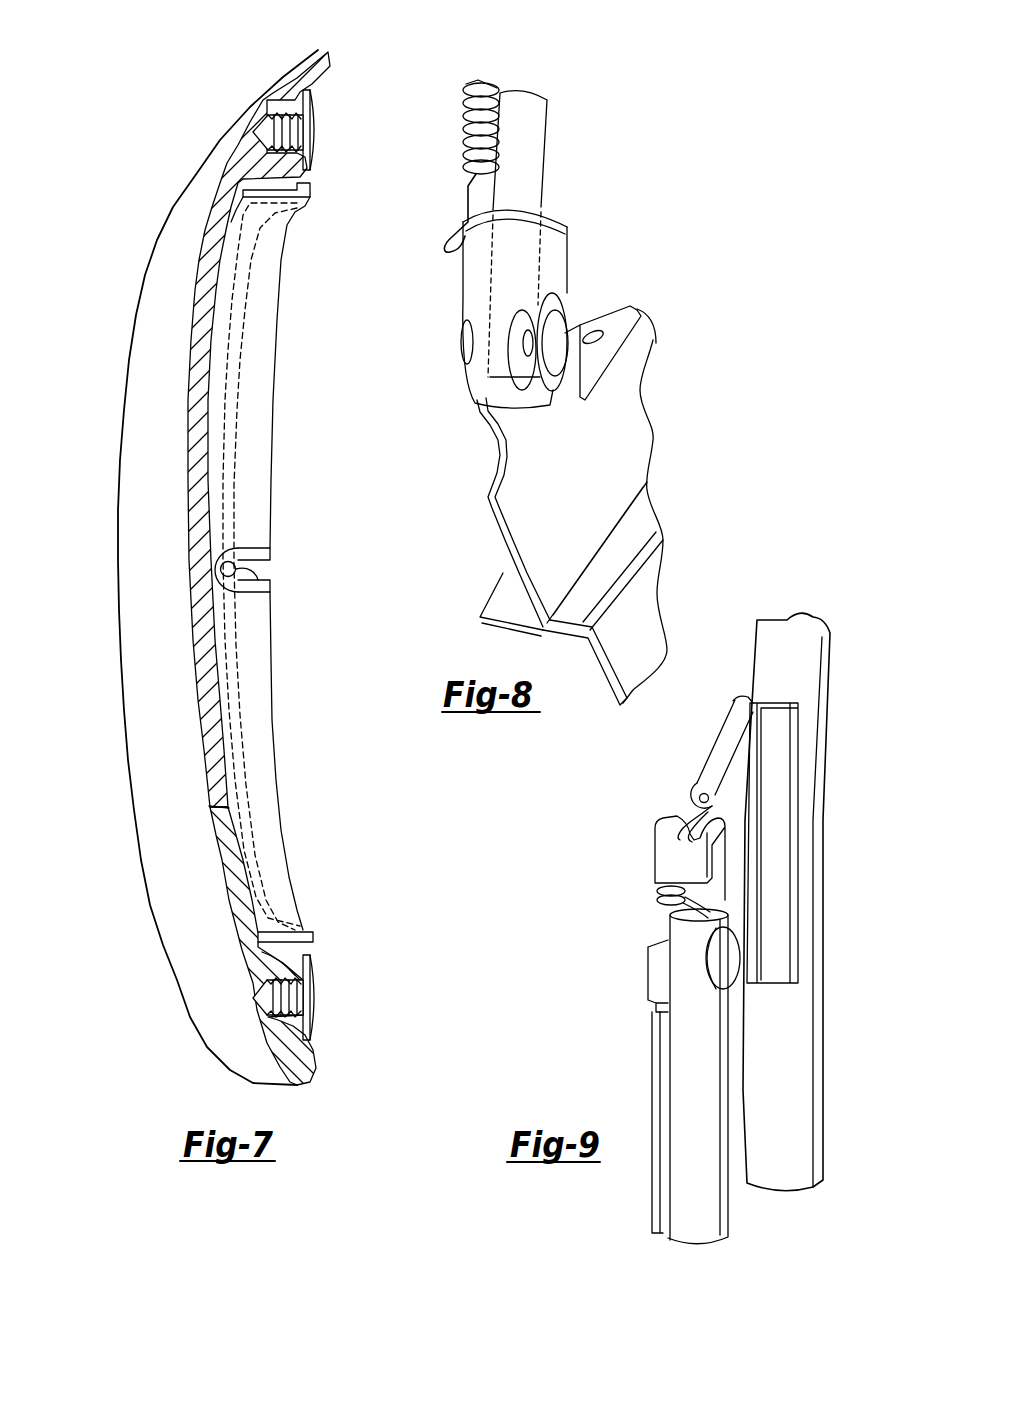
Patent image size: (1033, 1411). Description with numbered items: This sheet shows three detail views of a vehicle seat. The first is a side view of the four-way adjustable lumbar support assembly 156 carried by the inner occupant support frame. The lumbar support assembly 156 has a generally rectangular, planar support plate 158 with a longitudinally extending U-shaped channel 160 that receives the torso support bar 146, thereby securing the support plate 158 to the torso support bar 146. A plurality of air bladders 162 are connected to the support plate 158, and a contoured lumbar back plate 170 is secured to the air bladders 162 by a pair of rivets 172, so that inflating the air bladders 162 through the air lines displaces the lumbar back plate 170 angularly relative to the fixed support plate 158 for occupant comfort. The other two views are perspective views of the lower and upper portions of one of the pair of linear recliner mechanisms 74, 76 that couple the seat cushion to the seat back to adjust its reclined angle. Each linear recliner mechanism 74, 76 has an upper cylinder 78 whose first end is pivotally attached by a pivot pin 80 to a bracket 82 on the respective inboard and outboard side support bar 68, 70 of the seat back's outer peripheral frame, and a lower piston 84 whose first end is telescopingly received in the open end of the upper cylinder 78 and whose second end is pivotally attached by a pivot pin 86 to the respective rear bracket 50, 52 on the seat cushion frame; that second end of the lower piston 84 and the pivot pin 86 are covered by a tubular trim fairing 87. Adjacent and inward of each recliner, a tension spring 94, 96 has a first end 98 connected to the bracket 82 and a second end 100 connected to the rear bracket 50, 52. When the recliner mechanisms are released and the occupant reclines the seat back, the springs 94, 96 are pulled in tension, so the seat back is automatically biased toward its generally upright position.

In FIG. 7, the adjustable lumbar support assembly 156 is at (103, 760).
In FIG. 7, the contoured lumbar back plate 170 is at (190, 170).
In FIG. 7, the rivets 172 is at (313, 127).
In FIG. 7, the support plate 158 is at (280, 317).
In FIG. 7, the U-shaped channel 160 is at (260, 553).
In FIG. 7, the torso support bar 146 is at (260, 597).
In FIG. 7, the air bladders 162 is at (230, 825).
In FIG. 7, the linear recliner mechanism 74 is at (395, 170).
In FIG. 9, the linear recliner mechanism 74 is at (808, 872).
In FIG. 7, the linear recliner mechanism 76 is at (397, 217).
In FIG. 9, the linear recliner mechanism 76 is at (850, 717).
In FIG. 8, the tension spring 94 is at (532, 94).
In FIG. 9, the tension spring 94 is at (627, 918).
In FIG. 8, the tension spring 96 is at (483, 97).
In FIG. 9, the tension spring 96 is at (653, 895).
In FIG. 8, the lower piston 84 is at (547, 155).
In FIG. 8, the tubular trim fairing 87 is at (550, 237).
In FIG. 8, the pivot pin 86 is at (560, 327).
In FIG. 8, the second end 100 is at (447, 242).
In FIG. 8, the rear bracket 50 is at (539, 505).
In FIG. 8, the rear bracket 52 is at (500, 523).
In FIG. 9, the bracket 82 is at (733, 722).
In FIG. 9, the first end 98 is at (688, 817).
In FIG. 9, the pivot pin 80 is at (730, 965).
In FIG. 9, the upper cylinder 78 is at (680, 1160).
In FIG. 9, the inboard side support bar 68 is at (837, 943).
In FIG. 9, the outboard side support bar 70 is at (803, 1030).